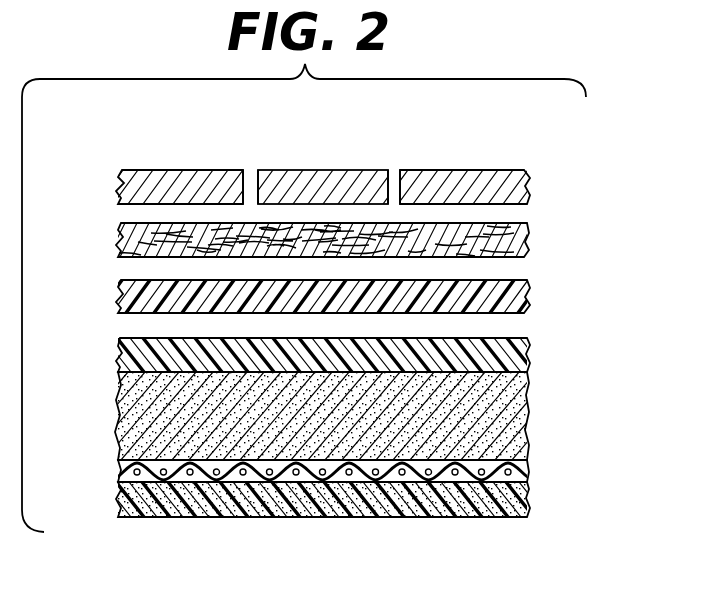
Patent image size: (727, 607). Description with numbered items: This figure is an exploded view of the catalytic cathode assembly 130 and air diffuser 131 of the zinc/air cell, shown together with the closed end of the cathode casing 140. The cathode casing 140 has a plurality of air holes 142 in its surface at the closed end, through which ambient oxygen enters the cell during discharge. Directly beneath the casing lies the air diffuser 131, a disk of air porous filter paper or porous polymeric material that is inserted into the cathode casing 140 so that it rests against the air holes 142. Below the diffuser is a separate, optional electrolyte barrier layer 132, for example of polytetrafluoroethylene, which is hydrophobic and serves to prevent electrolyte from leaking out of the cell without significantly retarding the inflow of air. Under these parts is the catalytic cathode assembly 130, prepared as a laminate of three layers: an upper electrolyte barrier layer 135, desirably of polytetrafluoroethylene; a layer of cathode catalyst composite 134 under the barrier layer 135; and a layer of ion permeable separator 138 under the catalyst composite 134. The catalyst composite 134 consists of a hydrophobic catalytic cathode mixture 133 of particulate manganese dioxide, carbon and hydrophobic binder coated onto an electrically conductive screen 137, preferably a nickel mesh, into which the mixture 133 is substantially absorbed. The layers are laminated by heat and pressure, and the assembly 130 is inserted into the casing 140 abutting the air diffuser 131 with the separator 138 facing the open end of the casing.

The catalytic cathode assembly 130 is at (93, 335).
The air diffuser 131 is at (518, 244).
The electrolyte barrier layer 132 is at (520, 295).
The hydrophobic catalytic cathode mixture 133 is at (518, 396).
The catalytic cathode composite 134 is at (537, 428).
The electrolyte barrier layer 135 is at (523, 357).
The electrically conductive screen 137 is at (522, 498).
The ion permeable separator 138 is at (490, 517).
The cathode casing 140 is at (512, 188).
The air holes 142 is at (396, 170).